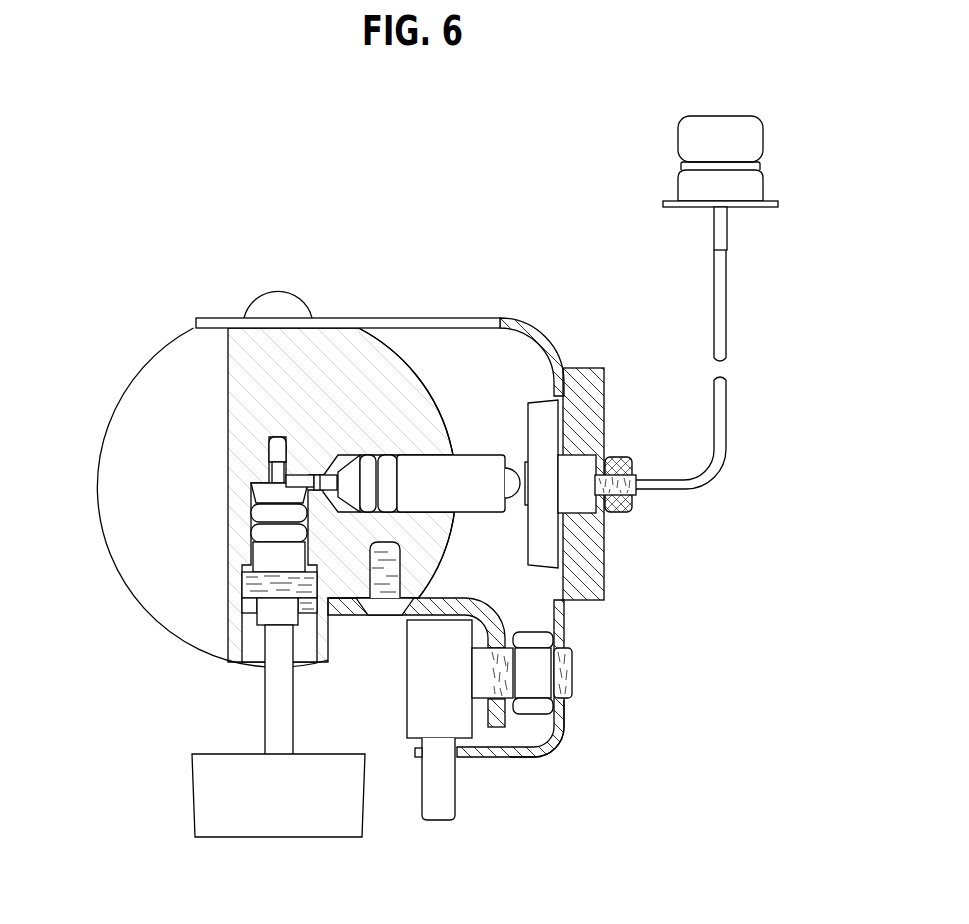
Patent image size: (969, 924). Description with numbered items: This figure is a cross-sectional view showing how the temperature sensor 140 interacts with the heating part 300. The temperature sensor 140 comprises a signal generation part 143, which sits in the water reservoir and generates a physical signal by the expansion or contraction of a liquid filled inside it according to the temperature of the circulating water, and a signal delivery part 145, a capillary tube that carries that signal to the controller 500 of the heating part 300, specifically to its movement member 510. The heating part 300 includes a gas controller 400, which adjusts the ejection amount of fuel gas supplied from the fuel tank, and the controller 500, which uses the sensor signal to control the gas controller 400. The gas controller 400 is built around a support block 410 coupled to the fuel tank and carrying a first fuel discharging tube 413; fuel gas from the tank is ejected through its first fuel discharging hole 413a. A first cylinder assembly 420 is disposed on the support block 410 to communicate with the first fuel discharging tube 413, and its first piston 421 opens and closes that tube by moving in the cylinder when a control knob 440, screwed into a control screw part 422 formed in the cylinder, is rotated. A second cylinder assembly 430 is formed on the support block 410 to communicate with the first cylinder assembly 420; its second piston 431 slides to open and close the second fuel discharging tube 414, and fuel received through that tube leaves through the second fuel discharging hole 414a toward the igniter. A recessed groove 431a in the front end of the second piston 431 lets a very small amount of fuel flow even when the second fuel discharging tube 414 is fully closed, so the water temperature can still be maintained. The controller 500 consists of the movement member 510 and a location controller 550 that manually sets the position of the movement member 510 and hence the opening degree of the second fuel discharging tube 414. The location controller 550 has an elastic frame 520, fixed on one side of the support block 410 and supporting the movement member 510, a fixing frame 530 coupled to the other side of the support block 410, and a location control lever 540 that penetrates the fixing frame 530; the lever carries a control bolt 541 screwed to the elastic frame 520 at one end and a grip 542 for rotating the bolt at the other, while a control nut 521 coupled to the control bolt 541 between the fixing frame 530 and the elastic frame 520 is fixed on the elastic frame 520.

The temperature sensor 140 is at (680, 176).
The signal generation part 143 is at (688, 184).
The signal delivery part 145 is at (714, 293).
The heating part 300 is at (150, 252).
The gas controller 400 is at (152, 620).
The support block 410 is at (97, 489).
The first fuel discharging tube 413 is at (269, 455).
The first fuel discharging hole 413a is at (271, 446).
The second fuel discharging tube 414 is at (300, 484).
The second fuel discharging hole 414a is at (338, 478).
The first cylinder assembly 420 is at (244, 521).
The first piston 421 is at (262, 552).
The control screw part 422 is at (250, 612).
The second cylinder assembly 430 is at (434, 440).
The second piston 431 is at (481, 456).
The recessed groove 431a is at (323, 478).
The control knob 440 is at (277, 822).
The controller 500 is at (615, 632).
The movement member 510 is at (541, 392).
The elastic frame 520 is at (441, 320).
The control nut 521 is at (532, 709).
The fixing frame 530 is at (466, 598).
The location control lever 540 is at (429, 751).
The control bolt 541 is at (573, 673).
The grip 542 is at (442, 806).
The location controller 550 is at (570, 737).